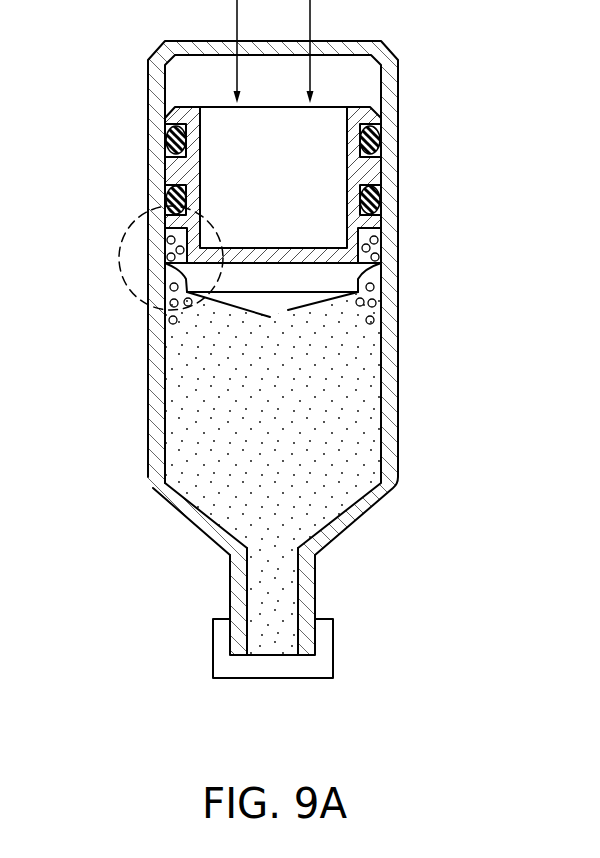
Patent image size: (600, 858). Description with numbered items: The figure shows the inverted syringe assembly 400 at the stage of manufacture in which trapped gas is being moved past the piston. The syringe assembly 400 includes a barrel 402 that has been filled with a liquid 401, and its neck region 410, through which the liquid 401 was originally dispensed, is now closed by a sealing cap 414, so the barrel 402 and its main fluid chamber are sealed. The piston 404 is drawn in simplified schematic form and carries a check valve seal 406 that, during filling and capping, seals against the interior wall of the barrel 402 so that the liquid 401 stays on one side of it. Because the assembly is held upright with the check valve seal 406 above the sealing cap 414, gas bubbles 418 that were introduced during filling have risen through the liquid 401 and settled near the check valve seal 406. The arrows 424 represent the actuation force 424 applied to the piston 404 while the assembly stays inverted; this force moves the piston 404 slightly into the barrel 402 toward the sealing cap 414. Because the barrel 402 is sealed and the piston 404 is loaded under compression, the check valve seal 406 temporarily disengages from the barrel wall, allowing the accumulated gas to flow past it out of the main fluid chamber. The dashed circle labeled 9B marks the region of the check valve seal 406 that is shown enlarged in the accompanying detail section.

The syringe assembly 400 is at (251, 367).
The liquid 401 is at (293, 446).
The barrel 402 is at (172, 516).
The piston 404 is at (285, 303).
The check valve seal 406 is at (170, 287).
The neck region 410 is at (230, 575).
The sealing cap 414 is at (270, 678).
The gas bubbles 418 is at (169, 321).
The actuation force 424 is at (236, 18).
The detail view region 9B is at (120, 233).